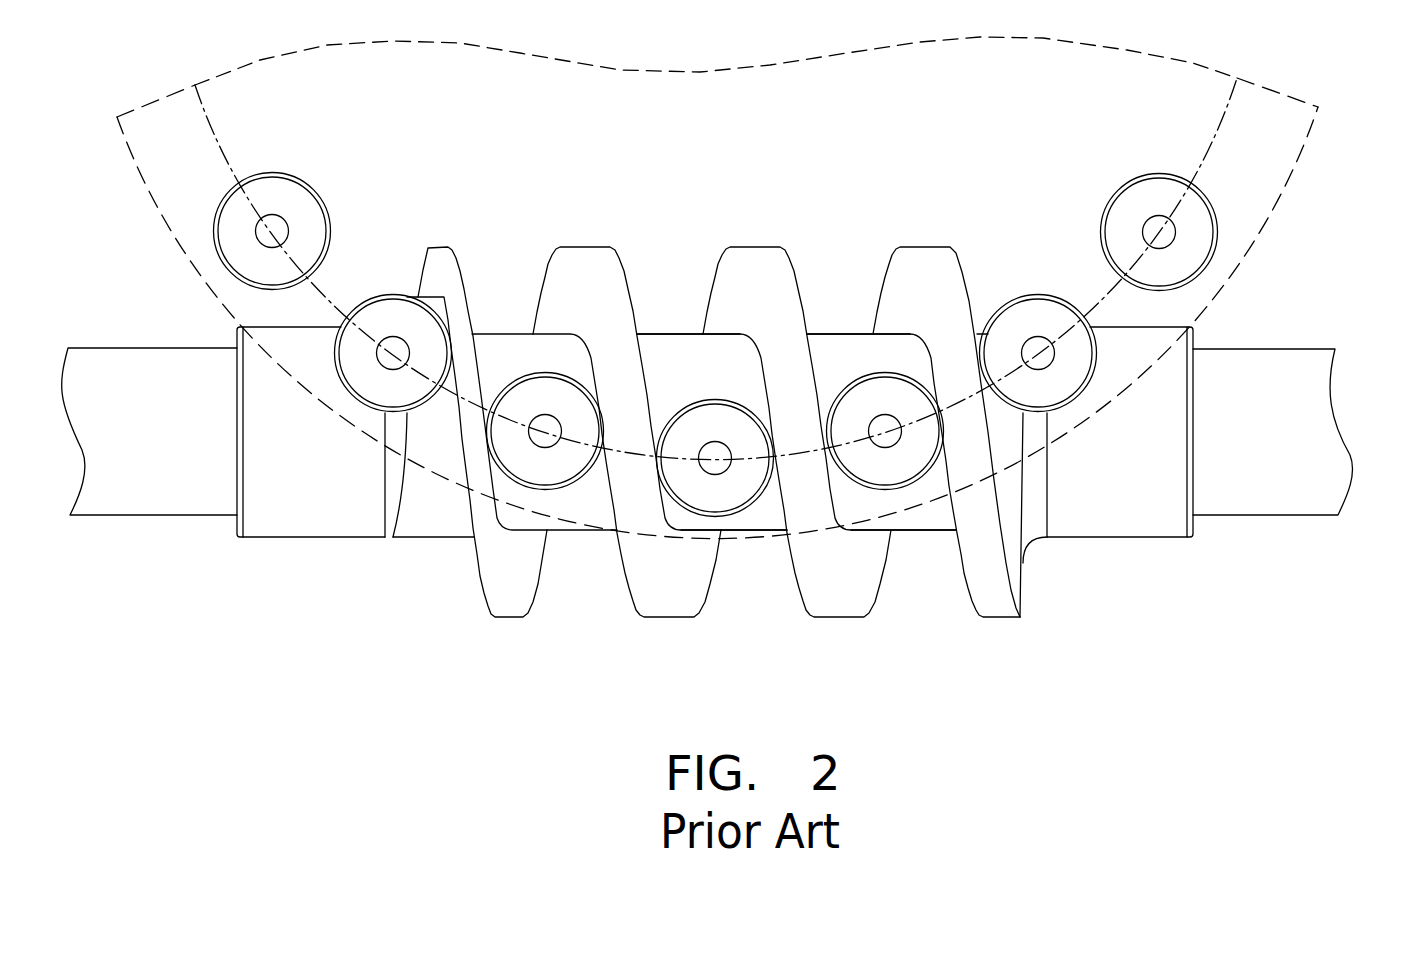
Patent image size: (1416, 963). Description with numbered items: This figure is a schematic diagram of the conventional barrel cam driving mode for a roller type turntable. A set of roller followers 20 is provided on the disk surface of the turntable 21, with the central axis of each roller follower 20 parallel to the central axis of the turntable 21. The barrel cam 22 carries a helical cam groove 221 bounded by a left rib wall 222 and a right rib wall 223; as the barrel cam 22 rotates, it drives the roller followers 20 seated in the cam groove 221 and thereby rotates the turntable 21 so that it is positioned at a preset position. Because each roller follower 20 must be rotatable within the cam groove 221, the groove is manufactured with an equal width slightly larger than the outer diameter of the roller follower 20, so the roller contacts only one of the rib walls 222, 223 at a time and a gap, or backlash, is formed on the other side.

The roller follower 20 is at (848, 365).
The turntable 21 is at (1281, 236).
The barrel cam 22 is at (1032, 634).
The cam groove 221 is at (671, 274).
The left rib wall 222 is at (623, 280).
The right rib wall 223 is at (722, 280).